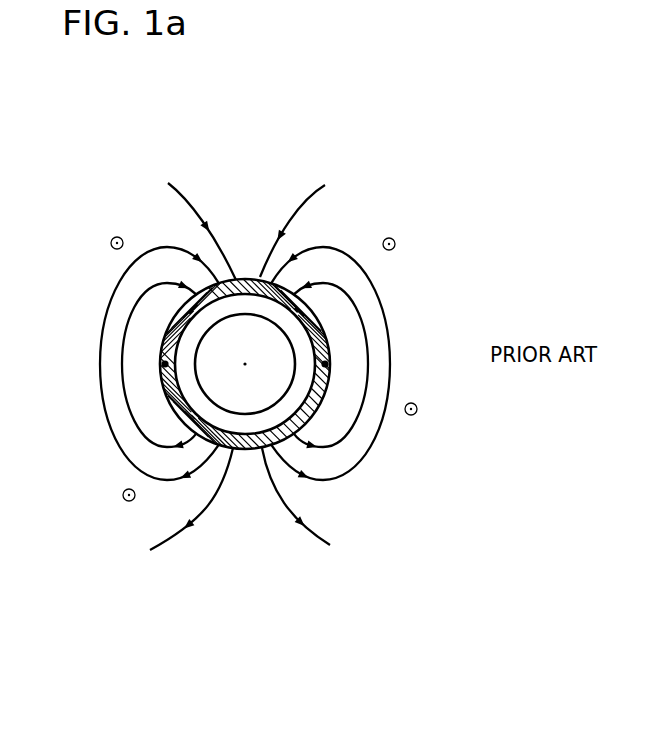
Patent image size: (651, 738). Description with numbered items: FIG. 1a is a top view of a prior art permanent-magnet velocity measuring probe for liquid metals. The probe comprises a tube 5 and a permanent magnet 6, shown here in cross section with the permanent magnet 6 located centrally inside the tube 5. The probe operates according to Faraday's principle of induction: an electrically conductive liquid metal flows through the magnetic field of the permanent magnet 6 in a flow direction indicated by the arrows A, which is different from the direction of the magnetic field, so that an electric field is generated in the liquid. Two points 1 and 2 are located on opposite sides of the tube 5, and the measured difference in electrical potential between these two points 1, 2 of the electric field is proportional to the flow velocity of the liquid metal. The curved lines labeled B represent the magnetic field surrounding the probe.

The point 1 is at (161, 364).
The point 2 is at (340, 364).
The tube 5 is at (312, 327).
The permanent magnet 6 is at (255, 363).
The arrows indicating flow direction A is at (394, 239).
The magnetic field lines B is at (170, 542).